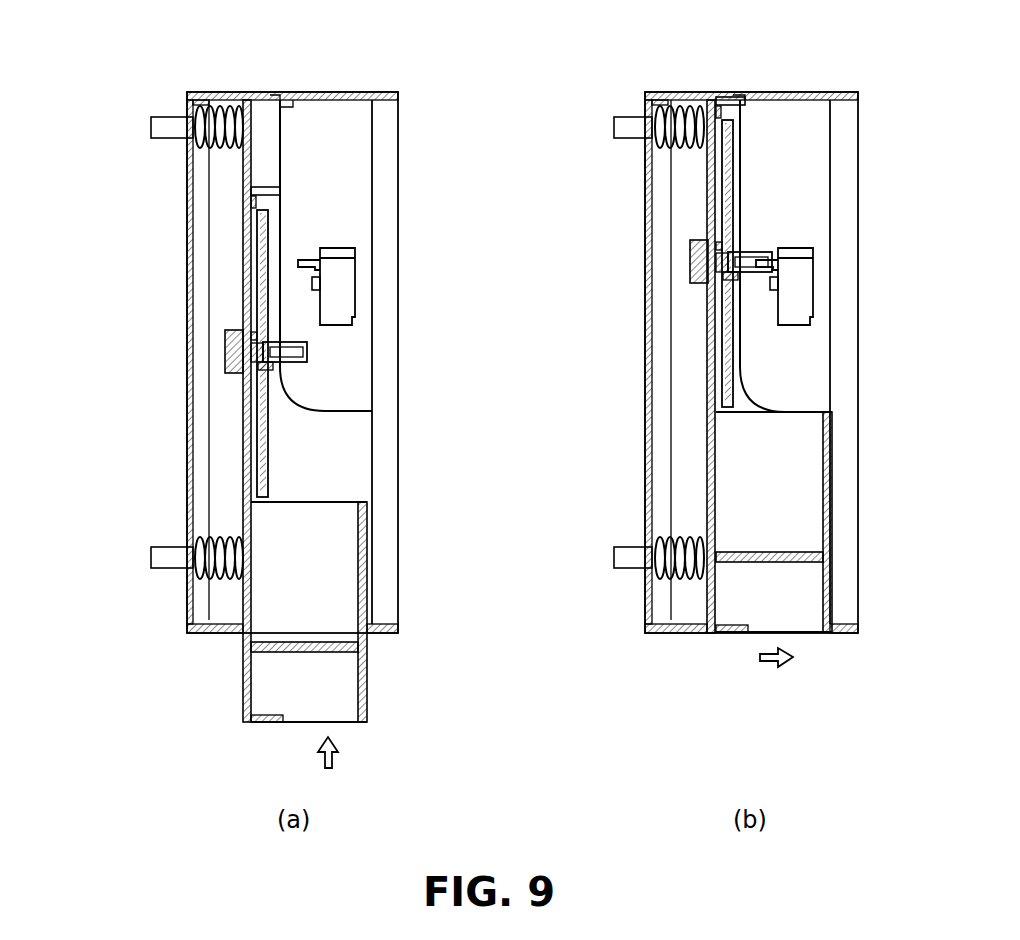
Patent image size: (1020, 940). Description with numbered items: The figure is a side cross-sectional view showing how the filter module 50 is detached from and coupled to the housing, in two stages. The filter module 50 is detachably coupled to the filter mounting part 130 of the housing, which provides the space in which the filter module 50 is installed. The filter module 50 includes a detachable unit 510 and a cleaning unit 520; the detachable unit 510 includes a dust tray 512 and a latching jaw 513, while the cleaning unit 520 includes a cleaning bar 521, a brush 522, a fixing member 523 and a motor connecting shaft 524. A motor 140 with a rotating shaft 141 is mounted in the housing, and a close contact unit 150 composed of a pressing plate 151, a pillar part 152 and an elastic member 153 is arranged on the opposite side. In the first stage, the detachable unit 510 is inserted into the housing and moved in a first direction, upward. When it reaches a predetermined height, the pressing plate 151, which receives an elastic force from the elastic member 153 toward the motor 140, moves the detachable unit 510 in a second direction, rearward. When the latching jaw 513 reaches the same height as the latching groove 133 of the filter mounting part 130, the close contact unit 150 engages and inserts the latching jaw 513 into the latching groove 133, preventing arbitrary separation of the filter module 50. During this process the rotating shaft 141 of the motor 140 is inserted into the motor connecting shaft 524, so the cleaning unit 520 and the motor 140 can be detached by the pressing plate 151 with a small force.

The filter module 50 is at (236, 673).
The filter mounting part 130 is at (190, 443).
The latching groove 133 is at (273, 93).
The motor 140 is at (349, 283).
The rotating shaft 141 is at (307, 258).
The close contact unit 150 is at (80, 77).
The pressing plate 151 is at (201, 96).
The pillar part 152 is at (150, 127).
The elastic member 153 is at (200, 157).
The detachable unit 510 is at (243, 503).
The dust tray 512 is at (368, 562).
The latching jaw 513 is at (281, 191).
The cleaning unit 520 is at (575, 215).
The cleaning bar 521 is at (269, 425).
The brush 522 is at (269, 483).
The fixing member 523 is at (278, 366).
The motor connecting shaft 524 is at (299, 352).